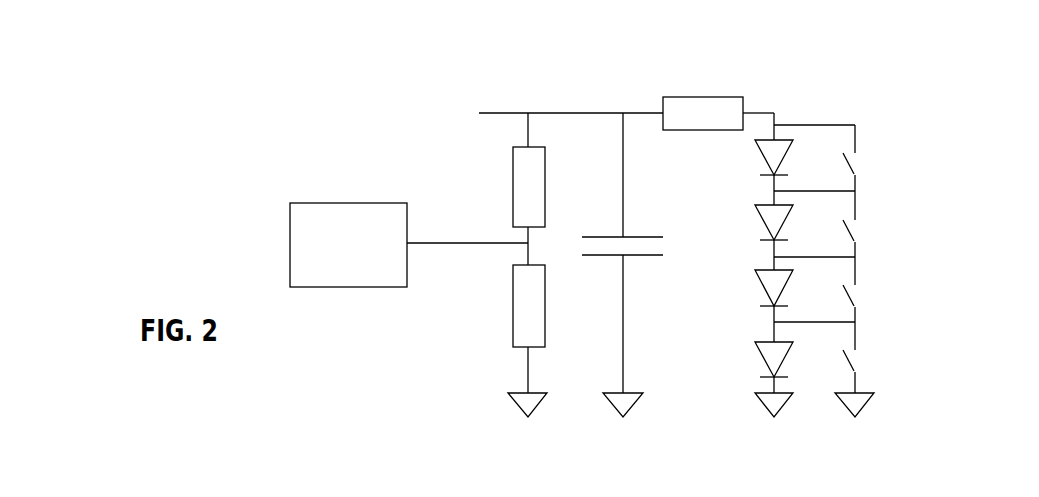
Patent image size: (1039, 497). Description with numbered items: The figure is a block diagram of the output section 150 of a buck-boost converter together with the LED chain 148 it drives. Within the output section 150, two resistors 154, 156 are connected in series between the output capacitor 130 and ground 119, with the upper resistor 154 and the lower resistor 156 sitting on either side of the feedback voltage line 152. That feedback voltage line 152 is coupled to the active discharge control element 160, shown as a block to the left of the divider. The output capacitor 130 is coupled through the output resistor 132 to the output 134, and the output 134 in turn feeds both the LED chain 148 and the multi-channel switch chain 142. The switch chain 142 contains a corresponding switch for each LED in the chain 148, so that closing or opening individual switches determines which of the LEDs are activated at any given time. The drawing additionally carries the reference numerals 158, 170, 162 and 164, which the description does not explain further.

The output section 150 is at (277, 75).
The active discharge control element 160 is at (363, 255).
The feedback voltage line 152 is at (465, 264).
The output voltage node VOUT 158 is at (550, 83).
The resistor 154 is at (495, 189).
The resistor 156 is at (495, 329).
The ground 119 is at (490, 411).
The output capacitor 130 is at (619, 265).
The output resistor 132 is at (703, 86).
The output 134 is at (799, 91).
The LED chain 148 is at (777, 318).
The multi-channel switch chain 142 is at (869, 311).
The reference numeral 170 is at (163, 488).
The reference numeral 162 is at (312, 493).
The reference numeral 164 is at (405, 493).